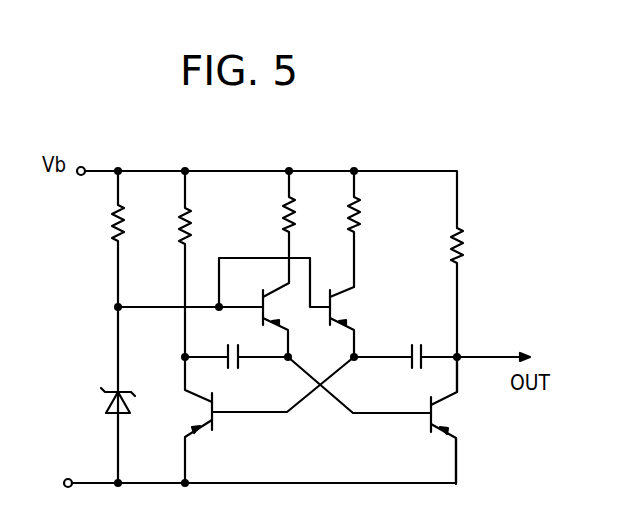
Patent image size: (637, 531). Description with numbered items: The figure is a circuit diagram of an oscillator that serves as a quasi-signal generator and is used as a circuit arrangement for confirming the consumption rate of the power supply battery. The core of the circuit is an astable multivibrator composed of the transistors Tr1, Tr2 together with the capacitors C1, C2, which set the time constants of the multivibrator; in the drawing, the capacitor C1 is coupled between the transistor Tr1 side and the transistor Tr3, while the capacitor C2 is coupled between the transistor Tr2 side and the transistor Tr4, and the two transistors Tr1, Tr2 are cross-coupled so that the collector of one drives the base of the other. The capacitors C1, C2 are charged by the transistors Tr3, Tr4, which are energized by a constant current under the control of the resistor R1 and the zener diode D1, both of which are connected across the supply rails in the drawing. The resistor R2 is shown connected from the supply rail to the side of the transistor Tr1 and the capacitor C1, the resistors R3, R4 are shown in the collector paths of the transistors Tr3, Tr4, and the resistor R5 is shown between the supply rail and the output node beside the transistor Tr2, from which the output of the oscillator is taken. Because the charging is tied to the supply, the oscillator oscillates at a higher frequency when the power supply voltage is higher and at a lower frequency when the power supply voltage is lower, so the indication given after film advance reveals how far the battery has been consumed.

The resistor R1 is at (115, 229).
The resistor R2 is at (184, 229).
The resistor R3 is at (288, 210).
The resistor R4 is at (351, 218).
The resistor R5 is at (456, 251).
The zener diode D1 is at (106, 401).
The transistor Tr1 is at (214, 432).
The transistor Tr2 is at (429, 433).
The transistor Tr3 is at (261, 296).
The transistor Tr4 is at (359, 320).
The capacitor C1 is at (239, 367).
The capacitor C2 is at (411, 367).